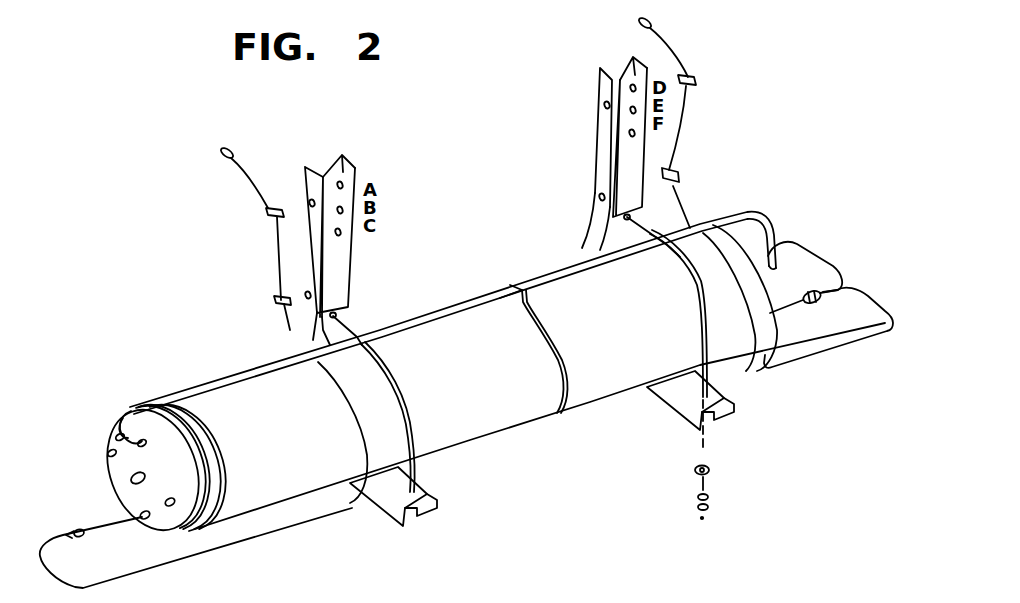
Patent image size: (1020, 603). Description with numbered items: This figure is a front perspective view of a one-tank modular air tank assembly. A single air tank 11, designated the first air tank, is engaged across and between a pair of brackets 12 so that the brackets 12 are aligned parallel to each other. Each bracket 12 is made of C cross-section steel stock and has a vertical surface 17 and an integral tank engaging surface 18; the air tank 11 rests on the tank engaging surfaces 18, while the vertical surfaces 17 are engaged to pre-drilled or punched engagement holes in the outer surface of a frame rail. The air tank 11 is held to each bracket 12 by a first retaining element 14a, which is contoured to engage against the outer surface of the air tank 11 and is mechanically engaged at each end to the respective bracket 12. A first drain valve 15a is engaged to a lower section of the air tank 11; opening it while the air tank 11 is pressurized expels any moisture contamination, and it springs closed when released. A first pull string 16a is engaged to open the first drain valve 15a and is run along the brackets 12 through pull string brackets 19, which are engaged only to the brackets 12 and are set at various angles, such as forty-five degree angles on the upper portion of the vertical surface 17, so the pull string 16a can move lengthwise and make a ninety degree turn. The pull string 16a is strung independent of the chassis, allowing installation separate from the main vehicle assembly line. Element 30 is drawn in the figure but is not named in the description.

The air tank 11 is at (340, 183).
The bracket 12 is at (352, 160).
The first retaining element 14a is at (398, 375).
The first drain valve 15a is at (68, 532).
The first pull string 16a is at (293, 524).
The vertical surface 17 is at (355, 293).
The tank engaging surface 18 is at (390, 493).
The pull string bracket 19 is at (267, 216).
The support rail 30 is at (208, 382).